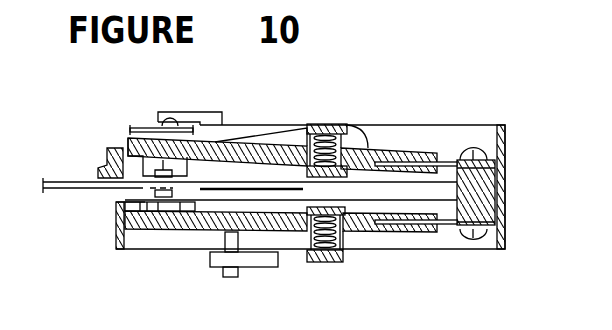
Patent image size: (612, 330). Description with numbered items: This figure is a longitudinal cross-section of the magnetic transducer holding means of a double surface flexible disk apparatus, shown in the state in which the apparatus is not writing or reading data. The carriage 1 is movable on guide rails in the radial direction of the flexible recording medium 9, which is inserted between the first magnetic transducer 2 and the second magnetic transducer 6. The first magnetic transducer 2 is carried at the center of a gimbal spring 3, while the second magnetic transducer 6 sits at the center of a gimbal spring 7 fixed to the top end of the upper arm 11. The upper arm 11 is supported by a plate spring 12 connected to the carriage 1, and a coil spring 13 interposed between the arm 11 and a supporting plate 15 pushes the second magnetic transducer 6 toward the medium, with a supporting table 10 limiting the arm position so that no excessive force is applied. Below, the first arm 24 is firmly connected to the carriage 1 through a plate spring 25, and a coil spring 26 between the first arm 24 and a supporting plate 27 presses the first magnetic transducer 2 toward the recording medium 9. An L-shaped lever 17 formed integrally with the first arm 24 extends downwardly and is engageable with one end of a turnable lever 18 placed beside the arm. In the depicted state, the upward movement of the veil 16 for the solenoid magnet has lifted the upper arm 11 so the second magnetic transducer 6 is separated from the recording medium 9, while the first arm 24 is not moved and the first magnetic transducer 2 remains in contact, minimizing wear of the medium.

The carriage 1 is at (505, 188).
The first magnetic transducer 2 is at (153, 225).
The gimbal spring 3 is at (187, 223).
The second magnetic transducer 6 is at (143, 166).
The gimbal spring 7 is at (227, 140).
The flexible recording medium 9 is at (62, 190).
The supporting table 10 is at (117, 146).
The arm 11 is at (372, 150).
The plate spring 12 is at (447, 165).
The coil spring 13 is at (345, 128).
The supporting plate 15 is at (310, 124).
The veil for a solenoid 16 is at (134, 124).
The L-shaped lever 17 is at (238, 275).
The turnable lever 18 is at (268, 267).
The first arm 24 is at (420, 232).
The plate spring 25 is at (452, 232).
The coil spring 26 is at (348, 252).
The supporting plate 27 is at (328, 262).